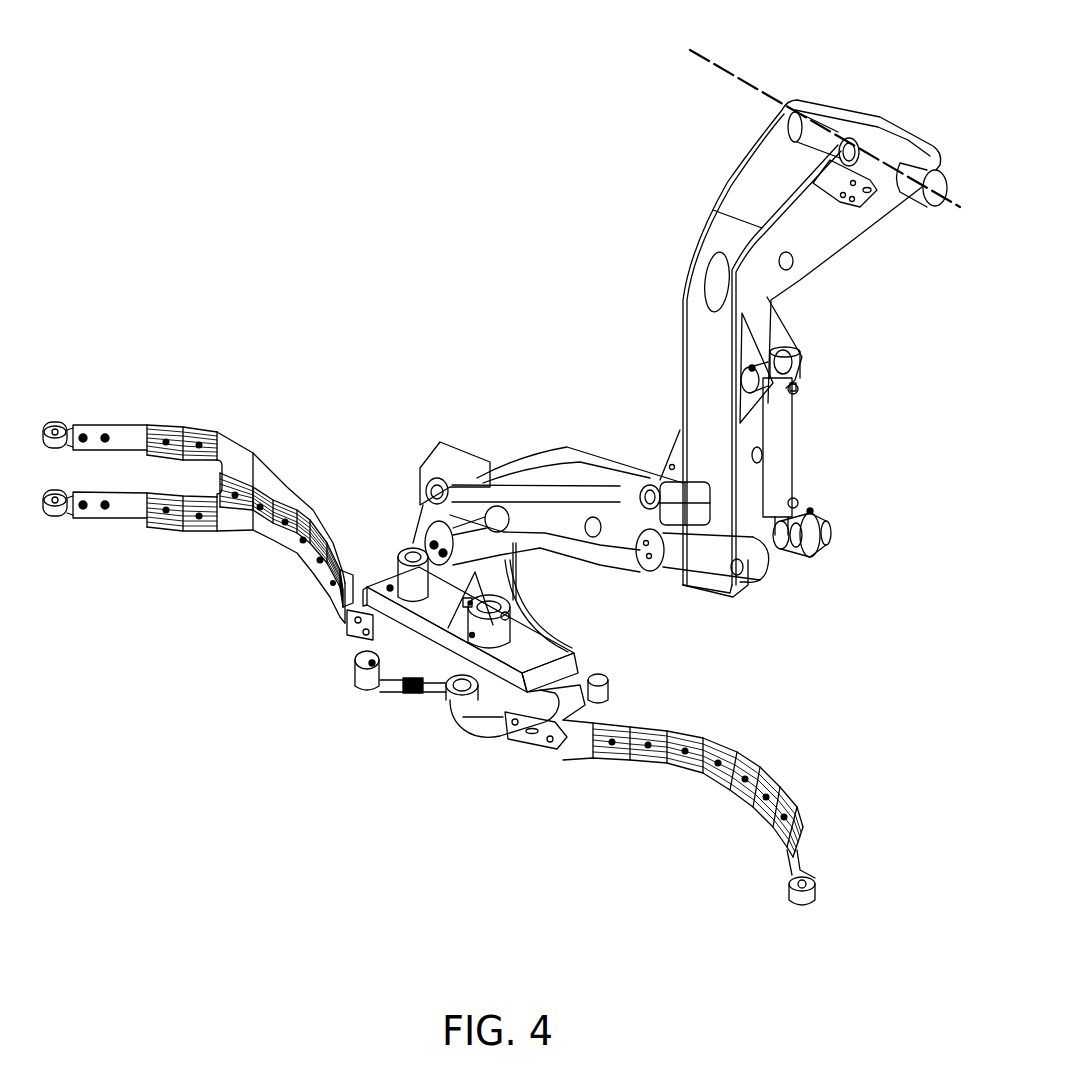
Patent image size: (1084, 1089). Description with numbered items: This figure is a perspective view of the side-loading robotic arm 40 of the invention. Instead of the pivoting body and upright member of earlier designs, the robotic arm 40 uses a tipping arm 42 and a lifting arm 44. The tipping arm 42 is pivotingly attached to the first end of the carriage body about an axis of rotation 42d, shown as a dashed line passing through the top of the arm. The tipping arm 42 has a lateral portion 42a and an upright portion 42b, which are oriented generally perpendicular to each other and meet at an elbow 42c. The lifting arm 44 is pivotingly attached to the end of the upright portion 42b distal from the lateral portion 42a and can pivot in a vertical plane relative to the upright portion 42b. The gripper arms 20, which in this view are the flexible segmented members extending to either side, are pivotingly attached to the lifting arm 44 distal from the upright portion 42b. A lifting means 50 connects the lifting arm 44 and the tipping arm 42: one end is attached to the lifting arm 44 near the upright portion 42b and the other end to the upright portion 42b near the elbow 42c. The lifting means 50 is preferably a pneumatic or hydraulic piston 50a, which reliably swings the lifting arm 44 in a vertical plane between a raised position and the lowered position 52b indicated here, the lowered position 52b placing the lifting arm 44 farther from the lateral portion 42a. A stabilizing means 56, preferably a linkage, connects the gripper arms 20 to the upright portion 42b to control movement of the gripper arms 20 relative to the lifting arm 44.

The gripper arms 20 is at (404, 783).
The robotic arm 40 is at (676, 326).
The tipping arm 42 is at (785, 301).
The lateral portion 42a is at (877, 217).
The upright portion 42b is at (681, 384).
The elbow 42c is at (683, 278).
The axis of rotation 42d is at (702, 58).
The lifting arm 44 is at (583, 463).
The lifting means 50 is at (776, 495).
The piston 50a is at (784, 459).
The lowered position 52b is at (816, 588).
The stabilizing means 56 is at (515, 491).